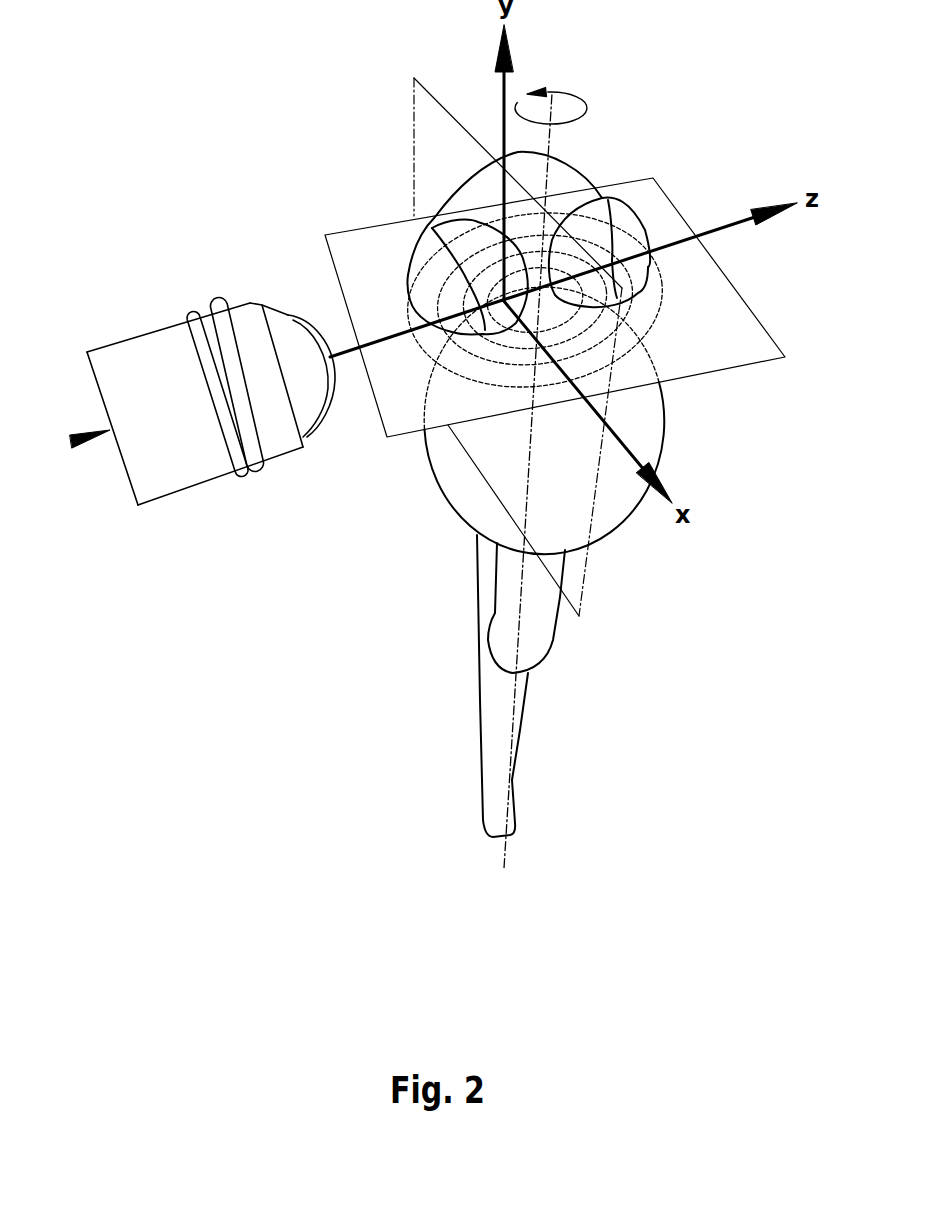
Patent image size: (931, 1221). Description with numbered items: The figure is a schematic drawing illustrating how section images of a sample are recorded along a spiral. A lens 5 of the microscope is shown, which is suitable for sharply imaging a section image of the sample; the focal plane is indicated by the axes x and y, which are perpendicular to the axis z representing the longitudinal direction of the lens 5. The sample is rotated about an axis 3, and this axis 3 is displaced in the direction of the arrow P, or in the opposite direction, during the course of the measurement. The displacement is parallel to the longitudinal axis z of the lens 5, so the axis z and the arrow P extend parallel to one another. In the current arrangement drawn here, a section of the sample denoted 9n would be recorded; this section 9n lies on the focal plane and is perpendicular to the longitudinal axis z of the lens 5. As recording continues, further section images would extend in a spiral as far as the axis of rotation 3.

The axis of rotation 3 is at (545, 133).
The lens 5 is at (333, 357).
The arrow P is at (538, 133).
The section of the sample 9n is at (582, 590).